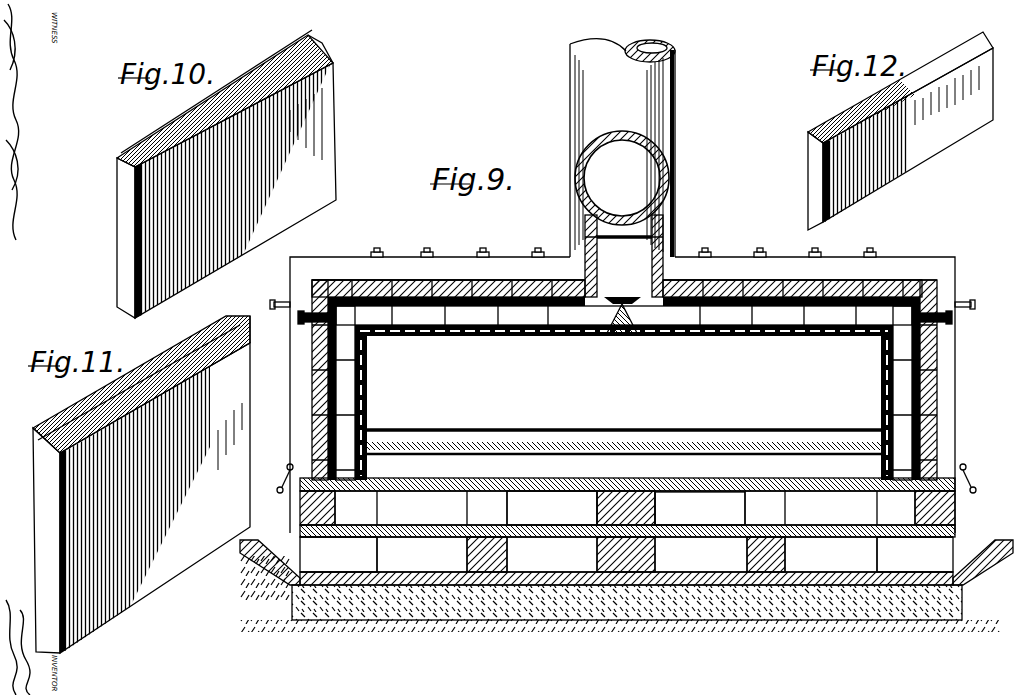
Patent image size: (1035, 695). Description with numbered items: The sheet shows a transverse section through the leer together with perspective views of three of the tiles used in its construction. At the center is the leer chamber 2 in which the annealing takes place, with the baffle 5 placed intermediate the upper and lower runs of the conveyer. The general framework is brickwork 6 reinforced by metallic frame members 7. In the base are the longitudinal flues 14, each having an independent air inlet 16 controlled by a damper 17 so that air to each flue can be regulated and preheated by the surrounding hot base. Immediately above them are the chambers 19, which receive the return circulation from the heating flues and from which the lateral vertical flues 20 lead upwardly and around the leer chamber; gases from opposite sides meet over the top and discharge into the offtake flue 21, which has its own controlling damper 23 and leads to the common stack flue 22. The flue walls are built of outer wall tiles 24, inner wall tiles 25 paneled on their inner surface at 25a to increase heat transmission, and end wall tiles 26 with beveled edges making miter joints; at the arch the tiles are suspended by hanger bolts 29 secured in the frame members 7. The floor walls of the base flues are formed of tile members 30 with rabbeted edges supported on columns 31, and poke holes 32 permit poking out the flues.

In FIG. 9, the leer chamber 2 is at (624, 407).
In FIG. 9, the baffle 5 is at (629, 443).
In FIG. 9, the brickwork 6 is at (462, 280).
In FIG. 9, the metallic frame members 7 is at (509, 264).
In FIG. 9, the longitudinal flues 14 is at (626, 554).
In FIG. 9, the air inlet 16 is at (626, 554).
In FIG. 9, the damper 17 is at (297, 548).
In FIG. 9, the chamber 19 is at (627, 508).
In FIG. 9, the lateral vertical flues 20 is at (343, 370).
In FIG. 9, the offtake flue 21 is at (624, 256).
In FIG. 9, the stack flue 22 is at (622, 148).
In FIG. 9, the controlling damper 23 is at (673, 238).
In FIG. 11, the outer wall tiles 24 is at (141, 484).
In FIG. 9, the outer wall tiles 24 is at (727, 288).
In FIG. 9, the inner wall tiles 25 is at (722, 336).
In FIG. 9, the panel 25a is at (548, 340).
In FIG. 12, the end wall tiles 26 is at (948, 138).
In FIG. 9, the hanger bolts 29 is at (382, 256).
In FIG. 10, the floor tile members 30 is at (226, 174).
In FIG. 9, the floor tile members 30 is at (548, 487).
In FIG. 9, the columns 31 is at (500, 507).
In FIG. 9, the poke holes 32 is at (330, 302).